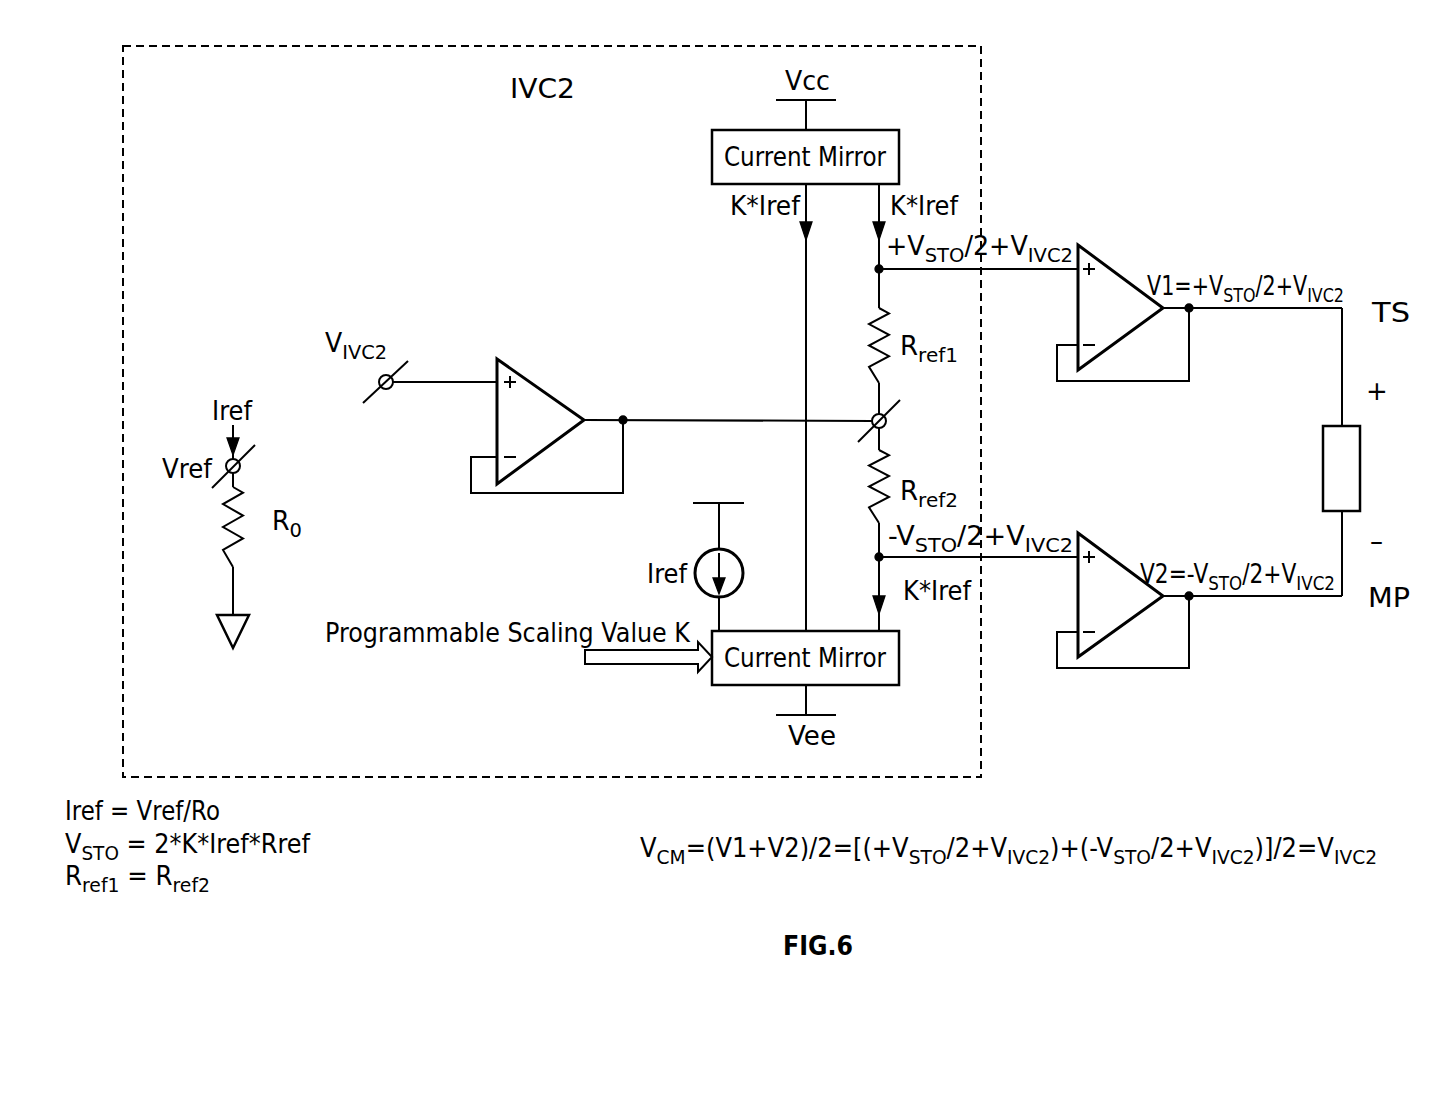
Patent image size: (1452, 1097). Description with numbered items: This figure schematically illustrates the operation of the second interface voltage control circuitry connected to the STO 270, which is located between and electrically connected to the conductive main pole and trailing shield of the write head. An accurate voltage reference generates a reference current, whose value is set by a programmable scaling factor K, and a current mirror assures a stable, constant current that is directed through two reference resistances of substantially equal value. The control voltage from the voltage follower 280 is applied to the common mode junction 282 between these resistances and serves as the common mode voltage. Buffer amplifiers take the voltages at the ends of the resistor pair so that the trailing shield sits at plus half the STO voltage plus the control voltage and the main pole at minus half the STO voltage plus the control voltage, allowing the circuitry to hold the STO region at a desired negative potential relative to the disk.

The STO 270 is at (1323, 446).
The voltage follower 280 is at (532, 396).
The common mode junction 282 is at (894, 427).